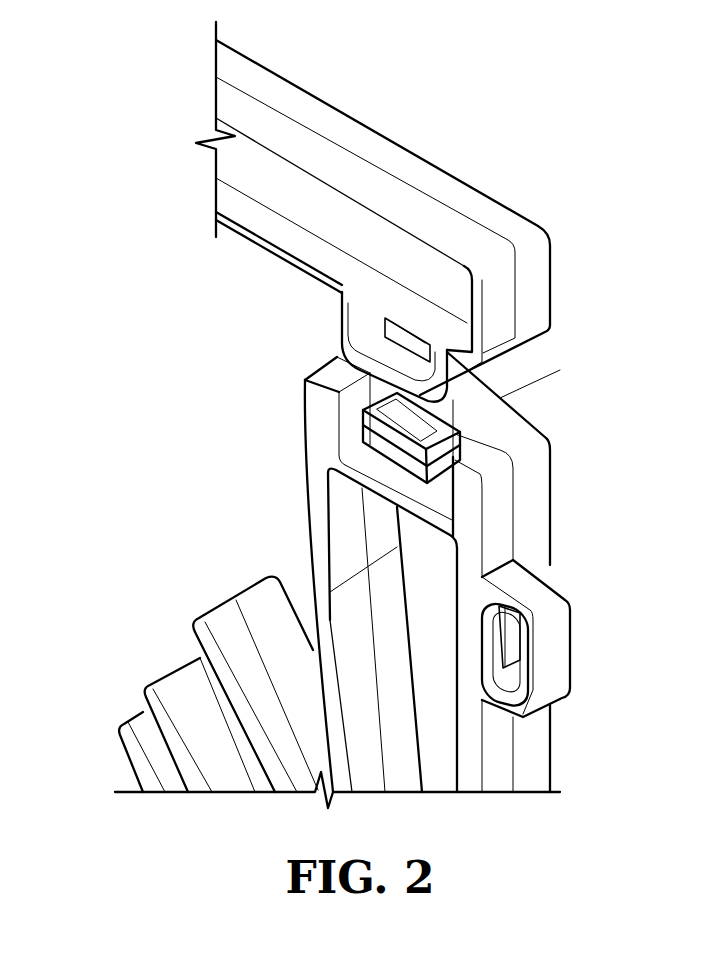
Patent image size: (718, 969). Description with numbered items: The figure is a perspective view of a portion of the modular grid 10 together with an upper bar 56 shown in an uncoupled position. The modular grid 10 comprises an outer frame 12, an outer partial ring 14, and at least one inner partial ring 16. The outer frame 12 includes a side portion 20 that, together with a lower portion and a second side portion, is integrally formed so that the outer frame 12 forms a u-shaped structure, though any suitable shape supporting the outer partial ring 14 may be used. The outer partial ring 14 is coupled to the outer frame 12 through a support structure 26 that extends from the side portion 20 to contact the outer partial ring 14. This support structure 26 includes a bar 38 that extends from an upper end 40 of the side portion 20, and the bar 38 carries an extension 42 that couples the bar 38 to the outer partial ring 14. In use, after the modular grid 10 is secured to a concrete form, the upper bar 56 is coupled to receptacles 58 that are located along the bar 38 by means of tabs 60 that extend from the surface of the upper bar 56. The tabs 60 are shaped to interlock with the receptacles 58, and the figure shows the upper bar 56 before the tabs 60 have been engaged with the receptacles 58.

The modular grid 10 is at (136, 278).
The outer frame 12 is at (538, 768).
The outer partial ring 14 is at (220, 617).
The inner partial ring 16 is at (133, 710).
The side portion 20 is at (540, 550).
The support structure 26 is at (308, 455).
The bar 38 is at (472, 497).
The upper end 40 is at (442, 570).
The extension 42 is at (313, 522).
The upper bar 56 is at (415, 178).
The receptacle 58 is at (470, 407).
The tab 60 is at (440, 384).